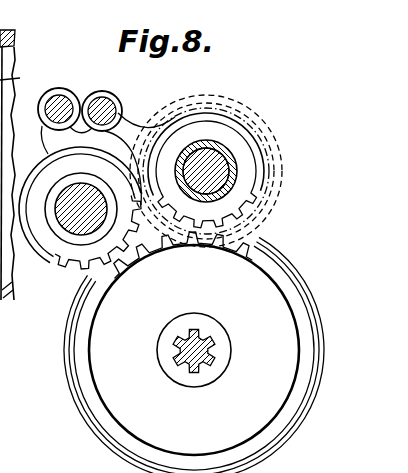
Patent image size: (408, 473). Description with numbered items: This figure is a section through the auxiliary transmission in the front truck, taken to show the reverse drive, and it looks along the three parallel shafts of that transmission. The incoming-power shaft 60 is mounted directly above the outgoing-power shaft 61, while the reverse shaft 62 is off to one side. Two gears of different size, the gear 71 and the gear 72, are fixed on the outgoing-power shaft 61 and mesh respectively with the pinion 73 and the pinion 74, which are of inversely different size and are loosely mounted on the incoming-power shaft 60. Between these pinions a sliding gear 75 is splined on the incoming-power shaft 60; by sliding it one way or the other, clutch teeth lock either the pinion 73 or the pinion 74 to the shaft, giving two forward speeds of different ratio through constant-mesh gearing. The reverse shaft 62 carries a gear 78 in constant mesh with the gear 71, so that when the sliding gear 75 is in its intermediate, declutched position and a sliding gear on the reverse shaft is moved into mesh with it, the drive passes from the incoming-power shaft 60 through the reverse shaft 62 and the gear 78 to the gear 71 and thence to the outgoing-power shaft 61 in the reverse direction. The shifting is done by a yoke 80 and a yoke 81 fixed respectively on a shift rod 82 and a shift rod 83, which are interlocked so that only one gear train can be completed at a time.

The incoming-power shaft 60 is at (222, 153).
The outgoing-power shaft 61 is at (190, 375).
The reverse shaft 62 is at (73, 237).
The gear 71 is at (88, 425).
The gear 72 is at (55, 88).
The pinion 73 is at (267, 167).
The pinion 74 is at (1, 33).
The sliding gear 75 is at (273, 207).
The gear 78 is at (77, 273).
The yoke 80 is at (128, 125).
The yoke 81 is at (48, 143).
The shift rod 82 is at (101, 100).
The shift rod 83 is at (60, 100).